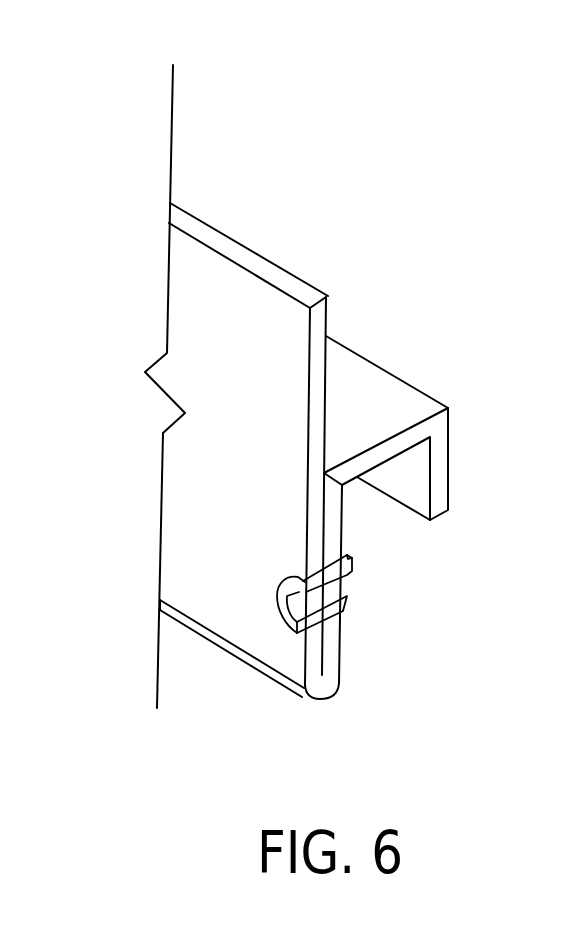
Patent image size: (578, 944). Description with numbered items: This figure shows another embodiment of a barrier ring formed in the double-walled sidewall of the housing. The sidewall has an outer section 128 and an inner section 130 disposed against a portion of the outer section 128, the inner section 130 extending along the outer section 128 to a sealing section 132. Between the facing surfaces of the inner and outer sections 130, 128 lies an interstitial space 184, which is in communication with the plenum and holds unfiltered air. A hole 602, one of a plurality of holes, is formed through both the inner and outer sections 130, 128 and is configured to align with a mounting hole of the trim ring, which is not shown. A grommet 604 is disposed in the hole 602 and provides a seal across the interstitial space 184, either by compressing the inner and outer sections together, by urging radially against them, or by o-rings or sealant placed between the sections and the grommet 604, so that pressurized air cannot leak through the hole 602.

The outer section 128 is at (310, 420).
The inner section 130 is at (337, 523).
The sealing section 132 is at (394, 430).
The interstitial space 184 is at (331, 462).
The hole 602 is at (348, 584).
The grommet 604 is at (347, 608).